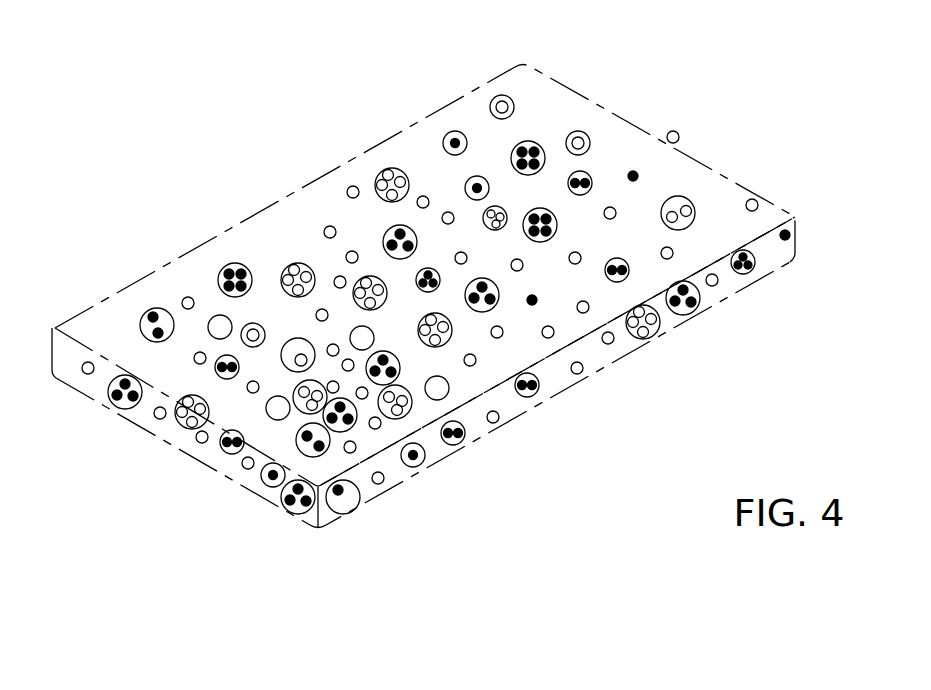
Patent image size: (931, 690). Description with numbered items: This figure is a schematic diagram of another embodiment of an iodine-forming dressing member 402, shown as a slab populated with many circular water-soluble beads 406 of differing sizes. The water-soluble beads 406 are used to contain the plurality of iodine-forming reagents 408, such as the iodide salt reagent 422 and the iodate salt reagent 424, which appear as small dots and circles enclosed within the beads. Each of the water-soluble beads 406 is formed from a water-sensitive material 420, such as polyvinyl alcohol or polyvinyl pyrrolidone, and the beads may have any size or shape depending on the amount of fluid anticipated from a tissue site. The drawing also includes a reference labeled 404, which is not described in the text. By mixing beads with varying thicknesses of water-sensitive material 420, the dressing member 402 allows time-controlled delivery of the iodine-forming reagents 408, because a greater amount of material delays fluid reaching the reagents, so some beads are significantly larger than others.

The iodine-forming dressing member 402 is at (266, 144).
The matrix material 404 is at (732, 287).
The water-soluble beads 406 is at (157, 308).
The iodine-forming reagents 408 is at (678, 198).
The water-sensitive material 420 is at (345, 503).
The iodide salt reagent 422 is at (198, 443).
The iodate salt reagent 424 is at (527, 141).